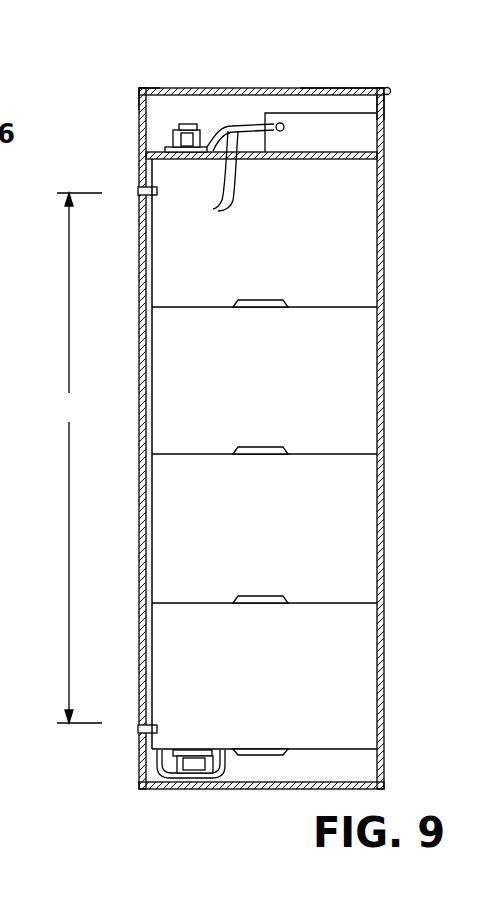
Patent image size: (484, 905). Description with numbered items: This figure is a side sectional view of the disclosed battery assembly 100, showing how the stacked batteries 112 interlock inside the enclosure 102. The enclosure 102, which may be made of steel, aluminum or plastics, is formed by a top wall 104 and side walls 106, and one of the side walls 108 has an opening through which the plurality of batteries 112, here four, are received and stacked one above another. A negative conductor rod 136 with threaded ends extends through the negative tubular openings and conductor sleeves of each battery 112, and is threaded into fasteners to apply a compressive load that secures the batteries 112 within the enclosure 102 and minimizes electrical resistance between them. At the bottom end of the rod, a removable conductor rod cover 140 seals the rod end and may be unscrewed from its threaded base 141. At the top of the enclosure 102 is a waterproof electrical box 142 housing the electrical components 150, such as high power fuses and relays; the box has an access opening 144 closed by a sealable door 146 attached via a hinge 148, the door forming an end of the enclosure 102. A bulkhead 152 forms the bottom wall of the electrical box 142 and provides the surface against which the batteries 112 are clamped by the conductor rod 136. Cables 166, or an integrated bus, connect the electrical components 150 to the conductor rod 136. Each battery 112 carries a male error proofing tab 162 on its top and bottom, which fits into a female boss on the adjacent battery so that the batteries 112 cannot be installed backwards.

The battery assembly 100 is at (127, 54).
The enclosure 102 is at (381, 410).
The top wall 104 is at (245, 88).
The side walls 106 is at (385, 262).
The side wall 108 is at (139, 136).
The batteries 112 is at (178, 253).
The negative conductor rod 136 is at (190, 125).
The removable conductor rod cover 140 is at (163, 778).
The threaded base 141 is at (207, 762).
The waterproof electrical box 142 is at (392, 100).
The access opening 144 is at (139, 97).
The sealable door 146 is at (327, 88).
The hinge 148 is at (389, 87).
The electrical components 150 is at (360, 135).
The bulkhead 152 is at (357, 162).
The male error proofing tab 162 is at (262, 158).
The cables 166 is at (214, 209).